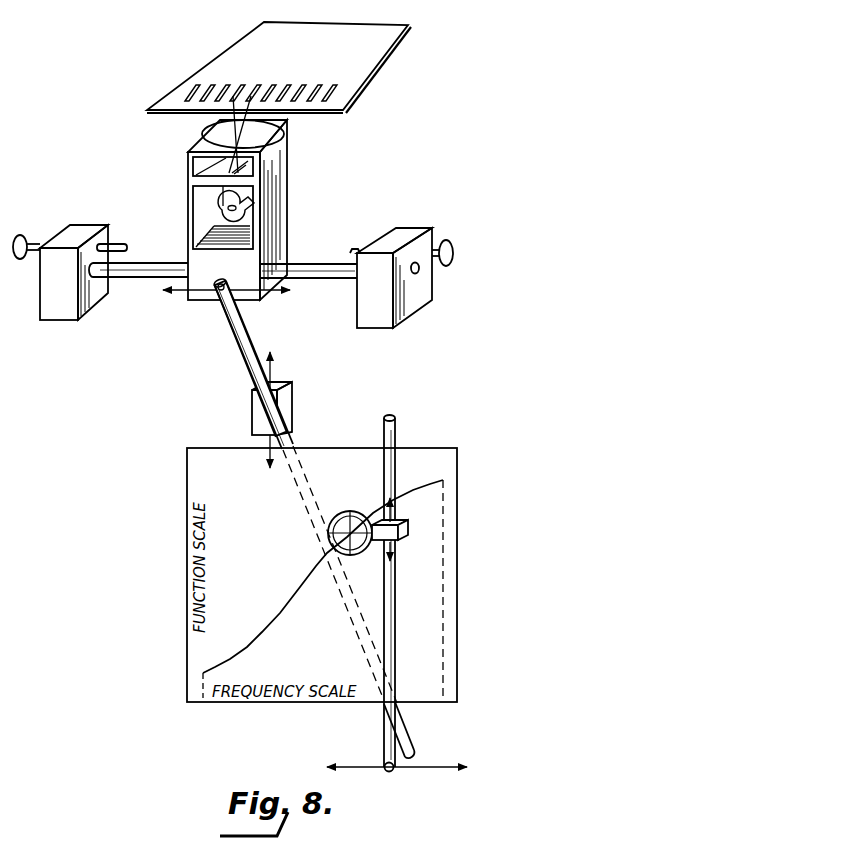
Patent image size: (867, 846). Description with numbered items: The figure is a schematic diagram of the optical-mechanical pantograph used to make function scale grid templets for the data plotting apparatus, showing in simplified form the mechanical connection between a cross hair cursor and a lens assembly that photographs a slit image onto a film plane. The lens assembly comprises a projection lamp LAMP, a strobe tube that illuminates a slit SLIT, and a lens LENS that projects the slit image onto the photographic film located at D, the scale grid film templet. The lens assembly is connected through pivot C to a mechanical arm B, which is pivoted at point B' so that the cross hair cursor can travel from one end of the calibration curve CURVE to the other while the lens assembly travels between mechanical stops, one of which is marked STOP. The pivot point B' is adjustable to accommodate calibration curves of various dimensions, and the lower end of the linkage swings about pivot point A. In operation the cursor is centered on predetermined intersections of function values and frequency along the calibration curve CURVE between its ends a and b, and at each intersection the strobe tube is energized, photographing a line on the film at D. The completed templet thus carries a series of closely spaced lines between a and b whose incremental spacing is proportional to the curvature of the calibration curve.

The photographic film D is at (374, 86).
The lens LENS is at (268, 130).
The slit SLIT is at (246, 166).
The projection lamp LAMP is at (214, 204).
The mechanical stop STOP is at (354, 252).
The pivot C is at (217, 292).
The mechanical arm B is at (280, 518).
The pivot point B' is at (311, 410).
The pivot point A is at (382, 764).
The calibration curve CURVE is at (246, 643).
The end point a is at (271, 380).
The end point b is at (324, 380).